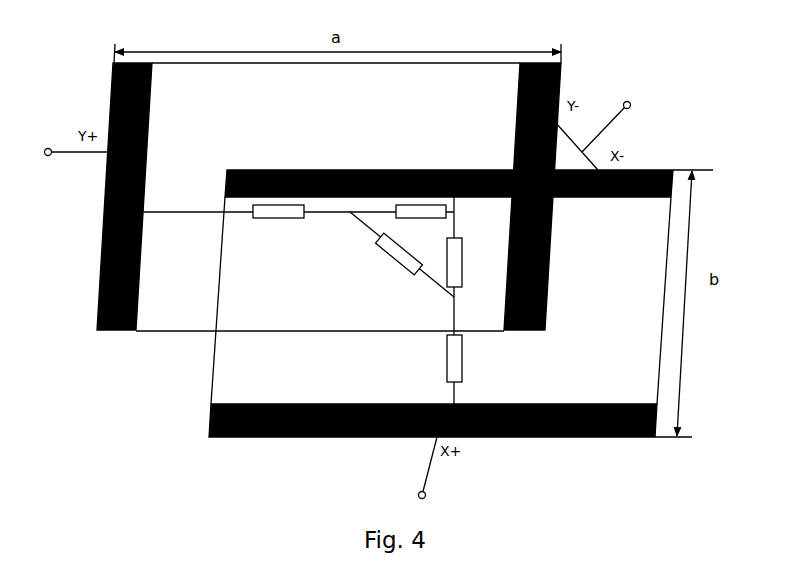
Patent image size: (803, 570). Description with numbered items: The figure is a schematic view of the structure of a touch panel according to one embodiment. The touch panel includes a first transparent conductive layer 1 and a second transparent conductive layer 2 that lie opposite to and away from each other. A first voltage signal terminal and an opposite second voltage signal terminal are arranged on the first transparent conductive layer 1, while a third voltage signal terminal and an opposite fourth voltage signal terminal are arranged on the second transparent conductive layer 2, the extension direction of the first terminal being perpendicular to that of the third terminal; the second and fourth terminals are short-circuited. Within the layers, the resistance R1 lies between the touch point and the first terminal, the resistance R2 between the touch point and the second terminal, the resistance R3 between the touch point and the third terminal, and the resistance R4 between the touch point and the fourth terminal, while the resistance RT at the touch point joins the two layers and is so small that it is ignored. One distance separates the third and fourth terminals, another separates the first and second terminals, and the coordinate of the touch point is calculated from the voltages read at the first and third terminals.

The first transparent conductive layer 1 is at (613, 358).
The second transparent conductive layer 2 is at (185, 270).
The resistance between the touch point and the first voltage signal terminal X+ R1 is at (467, 358).
The resistance between the touch point and the second voltage signal terminal X− R2 is at (468, 262).
The resistance between the touch point and the third voltage signal terminal Y+ R3 is at (278, 222).
The resistance between the touch point and the fourth voltage signal terminal Y− R4 is at (421, 222).
The resistance at the touch point RT is at (393, 257).